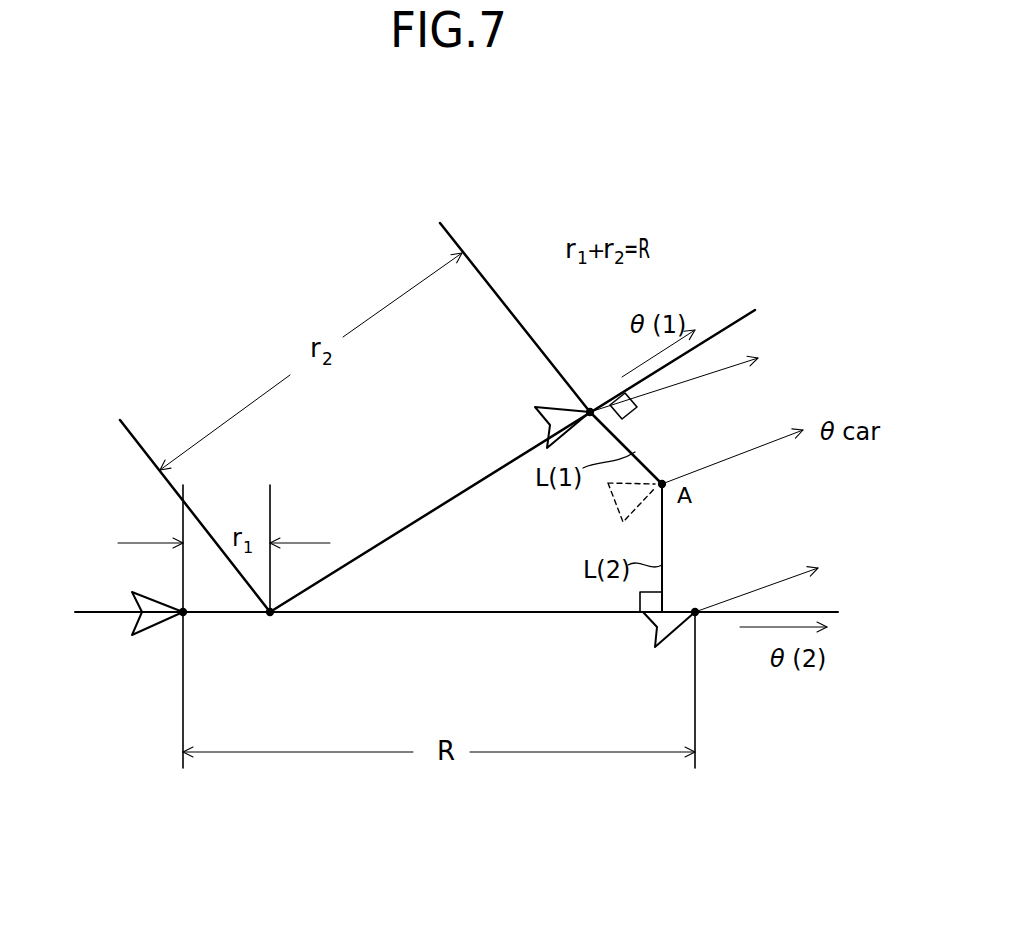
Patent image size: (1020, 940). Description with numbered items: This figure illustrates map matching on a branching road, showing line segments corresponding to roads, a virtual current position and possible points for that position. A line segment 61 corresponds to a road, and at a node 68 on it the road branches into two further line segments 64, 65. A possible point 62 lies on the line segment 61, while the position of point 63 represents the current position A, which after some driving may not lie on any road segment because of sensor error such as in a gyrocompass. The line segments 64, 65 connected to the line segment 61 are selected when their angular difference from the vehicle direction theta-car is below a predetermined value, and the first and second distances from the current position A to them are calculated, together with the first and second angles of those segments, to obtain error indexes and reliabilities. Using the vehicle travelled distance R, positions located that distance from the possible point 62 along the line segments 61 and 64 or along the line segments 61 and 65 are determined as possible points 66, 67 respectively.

The line segment 61 is at (98, 613).
The possible point 62 is at (181, 608).
The point 63 is at (664, 480).
The line segment 64 is at (398, 515).
The line segment 65 is at (395, 614).
The possible point 66 is at (590, 410).
The possible point 67 is at (698, 614).
The node 68 is at (270, 614).